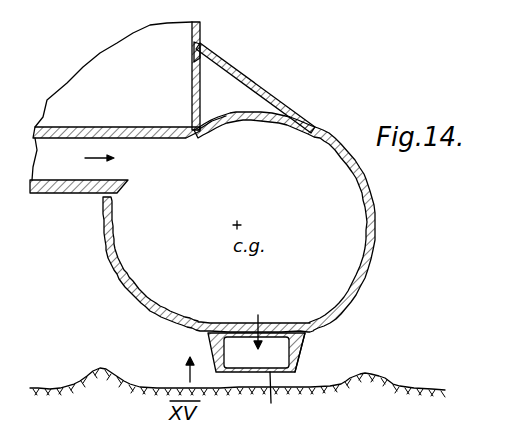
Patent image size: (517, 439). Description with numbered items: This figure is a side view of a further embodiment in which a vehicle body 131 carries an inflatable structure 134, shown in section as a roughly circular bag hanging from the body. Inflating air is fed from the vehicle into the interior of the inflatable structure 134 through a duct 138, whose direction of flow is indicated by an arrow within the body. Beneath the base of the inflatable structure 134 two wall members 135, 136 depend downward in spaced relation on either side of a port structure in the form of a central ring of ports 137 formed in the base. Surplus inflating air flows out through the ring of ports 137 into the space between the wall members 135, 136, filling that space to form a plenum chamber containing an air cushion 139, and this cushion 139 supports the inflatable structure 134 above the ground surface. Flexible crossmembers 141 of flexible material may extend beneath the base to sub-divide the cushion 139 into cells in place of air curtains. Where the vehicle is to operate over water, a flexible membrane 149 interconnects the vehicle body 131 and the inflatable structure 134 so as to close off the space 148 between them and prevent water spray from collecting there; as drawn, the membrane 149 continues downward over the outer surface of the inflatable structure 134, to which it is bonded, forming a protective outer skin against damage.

The vehicle body 131 is at (207, 36).
The flexible membrane 149 is at (273, 100).
The space between vehicle body and inflatable structure 148 is at (207, 112).
The duct 138 is at (53, 182).
The inflatable structure 134 is at (127, 298).
The wall member 135 is at (217, 352).
The ring of ports 137 is at (258, 315).
The air cushion 139 is at (264, 367).
The wall member 136 is at (297, 356).
The crossmember 141 is at (284, 397).